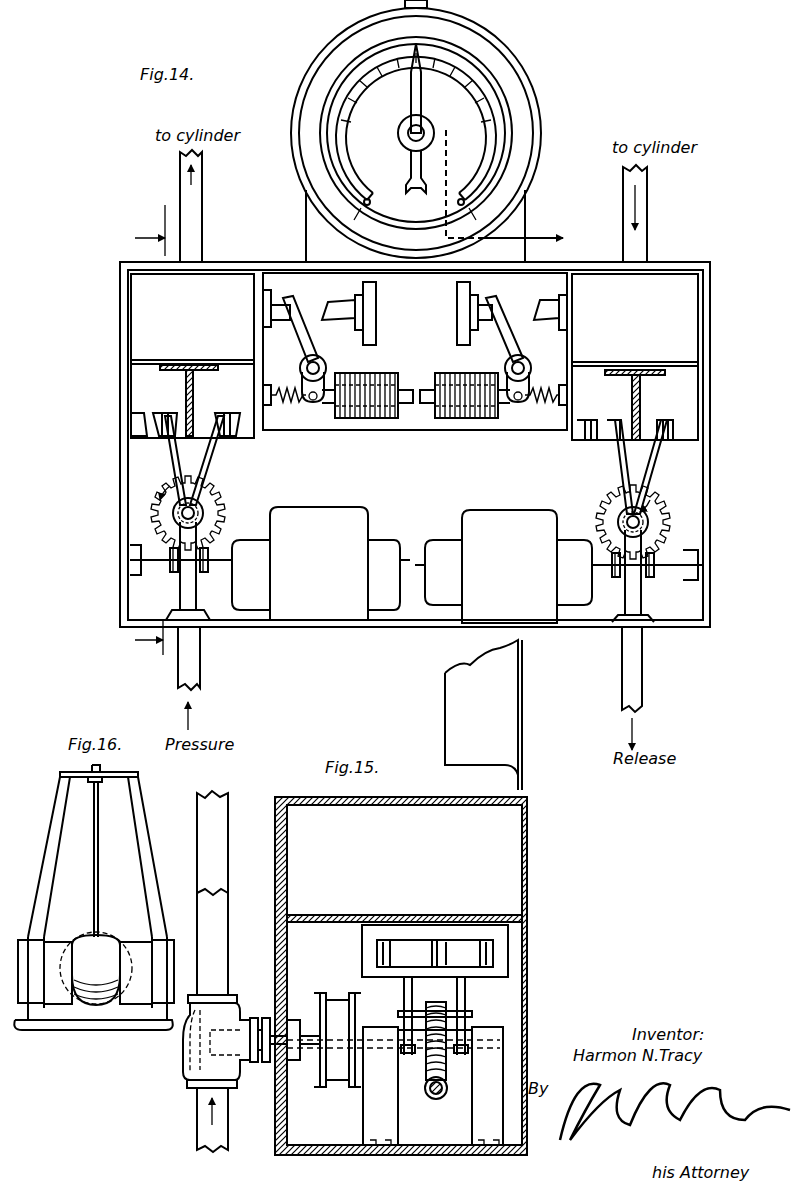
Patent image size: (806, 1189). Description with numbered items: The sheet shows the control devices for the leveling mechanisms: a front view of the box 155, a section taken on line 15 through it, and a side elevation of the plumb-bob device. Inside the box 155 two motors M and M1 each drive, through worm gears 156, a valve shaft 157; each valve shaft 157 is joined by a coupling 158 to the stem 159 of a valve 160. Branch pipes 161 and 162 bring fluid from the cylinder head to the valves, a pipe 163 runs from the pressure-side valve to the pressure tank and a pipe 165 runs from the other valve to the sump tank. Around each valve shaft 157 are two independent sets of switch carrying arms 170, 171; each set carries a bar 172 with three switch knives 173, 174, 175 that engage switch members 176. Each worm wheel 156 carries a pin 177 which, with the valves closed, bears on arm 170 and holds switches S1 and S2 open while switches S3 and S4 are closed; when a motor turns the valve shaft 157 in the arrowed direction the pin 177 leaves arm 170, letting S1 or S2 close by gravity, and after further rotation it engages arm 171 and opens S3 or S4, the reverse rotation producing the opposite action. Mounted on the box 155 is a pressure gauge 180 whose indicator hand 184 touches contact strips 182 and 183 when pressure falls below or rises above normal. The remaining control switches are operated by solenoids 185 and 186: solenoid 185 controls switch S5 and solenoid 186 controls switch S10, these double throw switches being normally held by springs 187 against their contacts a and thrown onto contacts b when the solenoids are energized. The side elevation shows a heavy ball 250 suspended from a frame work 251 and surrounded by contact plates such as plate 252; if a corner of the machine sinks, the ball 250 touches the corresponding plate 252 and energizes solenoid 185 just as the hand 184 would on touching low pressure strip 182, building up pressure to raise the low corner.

In FIG. 14, the section line 15— 15 is at (146, 437).
In FIG. 14, the box 155 is at (120, 318).
In FIG. 14, the worm gear 156 is at (208, 501).
In FIG. 15, the worm gear 156 is at (425, 1088).
In FIG. 14, the valve shaft 157 is at (203, 511).
In FIG. 15, the valve shaft 157 is at (378, 1043).
In FIG. 15, the coupling 158 is at (346, 1022).
In FIG. 15, the stem 159 is at (310, 1045).
In FIG. 15, the valve 160 is at (195, 1046).
In FIG. 14, the branch pipe 161 is at (195, 173).
In FIG. 15, the branch pipe 161 is at (220, 955).
In FIG. 14, the branch pipe 162 is at (640, 193).
In FIG. 15, the branch pipe 162 is at (218, 840).
In FIG. 14, the pipe 163 is at (190, 663).
In FIG. 15, the pipe 163 is at (218, 1133).
In FIG. 14, the pipe 165 is at (632, 676).
In FIG. 14, the switch carrying arm 170 is at (176, 456).
In FIG. 15, the switch carrying arm 170 is at (414, 988).
In FIG. 14, the switch carrying arm 171 is at (212, 458).
In FIG. 14, the bar 172 is at (174, 412).
In FIG. 15, the bar 172 is at (410, 952).
In FIG. 14, the switch knife 173 is at (155, 412).
In FIG. 15, the switch knife 173 is at (386, 952).
In FIG. 15, the switch knife 174 is at (450, 952).
In FIG. 15, the switch knife 175 is at (490, 955).
In FIG. 14, the switch member 176 is at (137, 425).
In FIG. 14, the pin 177 is at (150, 494).
In FIG. 15, the pin 177 is at (472, 1014).
In FIG. 14, the pressure gauge 180 is at (520, 57).
In FIG. 14, the contact strip 182 is at (340, 78).
In FIG. 14, the contact strip 183 is at (495, 118).
In FIG. 14, the indicator hand 184 is at (418, 97).
In FIG. 14, the solenoid 185 is at (374, 420).
In FIG. 14, the solenoid 186 is at (462, 420).
In FIG. 14, the spring 187 is at (288, 403).
In FIG. 16, the ball 250 is at (96, 968).
In FIG. 16, the frame work 251 is at (142, 854).
In FIG. 16, the contact plate 252 is at (58, 1000).
In FIG. 14, the switch S1 is at (148, 410).
In FIG. 14, the switch S2 is at (604, 435).
In FIG. 14, the switch S3 is at (224, 411).
In FIG. 14, the switch S4 is at (667, 418).
In FIG. 14, the double throw switch S5 is at (305, 300).
In FIG. 14, the double throw switch S10 is at (523, 300).
In FIG. 14, the contact a is at (283, 313).
In FIG. 14, the contact b is at (345, 312).
In FIG. 14, the motor M is at (316, 563).
In FIG. 14, the motor M1 is at (503, 566).